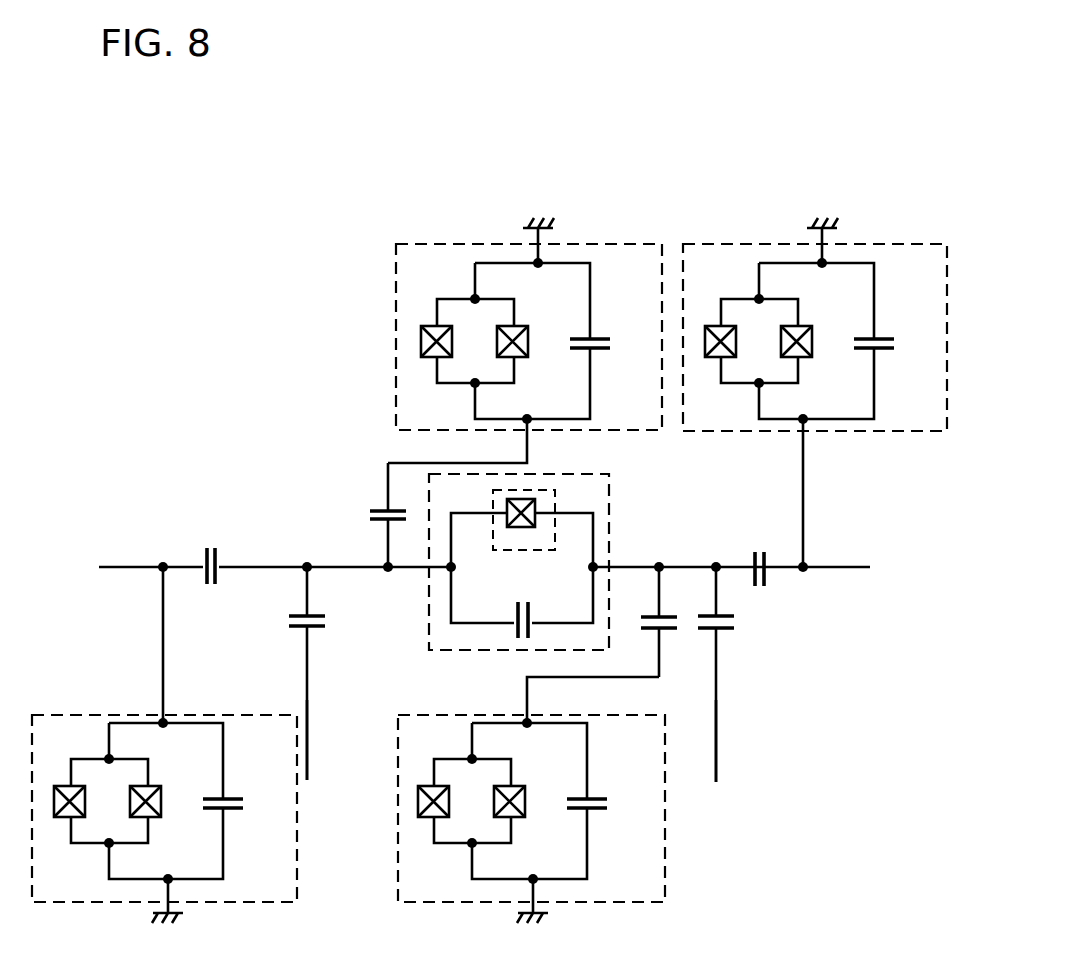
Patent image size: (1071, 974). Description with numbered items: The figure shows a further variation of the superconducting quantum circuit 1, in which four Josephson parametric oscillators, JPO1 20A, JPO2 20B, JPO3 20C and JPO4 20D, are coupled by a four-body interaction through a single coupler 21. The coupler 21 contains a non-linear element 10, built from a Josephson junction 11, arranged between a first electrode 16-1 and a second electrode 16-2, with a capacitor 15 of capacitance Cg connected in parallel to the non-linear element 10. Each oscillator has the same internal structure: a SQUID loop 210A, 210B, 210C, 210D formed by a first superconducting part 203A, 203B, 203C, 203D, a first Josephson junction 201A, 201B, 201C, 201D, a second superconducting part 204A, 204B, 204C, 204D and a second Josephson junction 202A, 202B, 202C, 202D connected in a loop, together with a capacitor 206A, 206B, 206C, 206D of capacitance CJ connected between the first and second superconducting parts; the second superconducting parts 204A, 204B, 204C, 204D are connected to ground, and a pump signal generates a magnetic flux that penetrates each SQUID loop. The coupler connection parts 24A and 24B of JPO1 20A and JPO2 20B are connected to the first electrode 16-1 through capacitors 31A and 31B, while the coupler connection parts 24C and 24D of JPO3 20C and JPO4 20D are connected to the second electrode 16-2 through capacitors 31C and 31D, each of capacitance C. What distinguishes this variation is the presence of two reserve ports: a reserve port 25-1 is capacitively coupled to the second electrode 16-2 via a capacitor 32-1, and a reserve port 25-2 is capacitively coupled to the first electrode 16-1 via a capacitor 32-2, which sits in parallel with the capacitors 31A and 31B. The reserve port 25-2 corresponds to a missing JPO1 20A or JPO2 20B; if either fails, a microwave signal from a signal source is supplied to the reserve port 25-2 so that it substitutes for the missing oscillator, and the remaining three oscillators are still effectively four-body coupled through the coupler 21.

The superconducting quantum circuit 1 is at (557, 92).
The non-linear element 10 is at (554, 508).
The Josephson junction 11 is at (504, 524).
The capacitor 15 is at (531, 610).
The first electrode 16-1 is at (426, 574).
The second electrode 16-2 is at (602, 568).
The coupler 21 is at (604, 468).
The JPO1 20A is at (561, 247).
The JPO2 20B is at (50, 713).
The JPO3 20C is at (608, 721).
The JPO4 20D is at (852, 249).
The coupler connection part 24A is at (533, 451).
The coupler connection part 24B is at (171, 674).
The coupler connection part 24C is at (533, 704).
The coupler connection part 24D is at (810, 457).
The reserve port 25-1 is at (720, 670).
The reserve port 25-2 is at (310, 688).
The capacitor 31A is at (371, 508).
The capacitor 31B is at (218, 575).
The capacitor 31C is at (654, 616).
The capacitor 31D is at (744, 560).
The capacitor 32-1 is at (735, 622).
The capacitor 32-2 is at (318, 612).
The first Josephson junction 201A is at (437, 330).
The first Josephson junction 201B is at (71, 790).
The first Josephson junction 201C is at (434, 790).
The first Josephson junction 201D is at (721, 330).
The second Josephson junction 202A is at (514, 360).
The second Josephson junction 202B is at (148, 820).
The second Josephson junction 202C is at (511, 820).
The second Josephson junction 202D is at (818, 360).
The first superconducting part 203A is at (465, 297).
The first superconducting part 203B is at (99, 757).
The first superconducting part 203C is at (462, 757).
The first superconducting part 203D is at (749, 297).
The second superconducting part 204A is at (450, 383).
The second superconducting part 204B is at (84, 843).
The second superconducting part 204C is at (447, 843).
The second superconducting part 204D is at (734, 383).
The capacitor 206A is at (598, 341).
The capacitor 206B is at (232, 801).
The capacitor 206C is at (595, 801).
The capacitor 206D is at (882, 341).
The SQUID loop 210A is at (522, 320).
The SQUID loop 210B is at (156, 780).
The SQUID loop 210C is at (519, 780).
The SQUID loop 210D is at (806, 320).